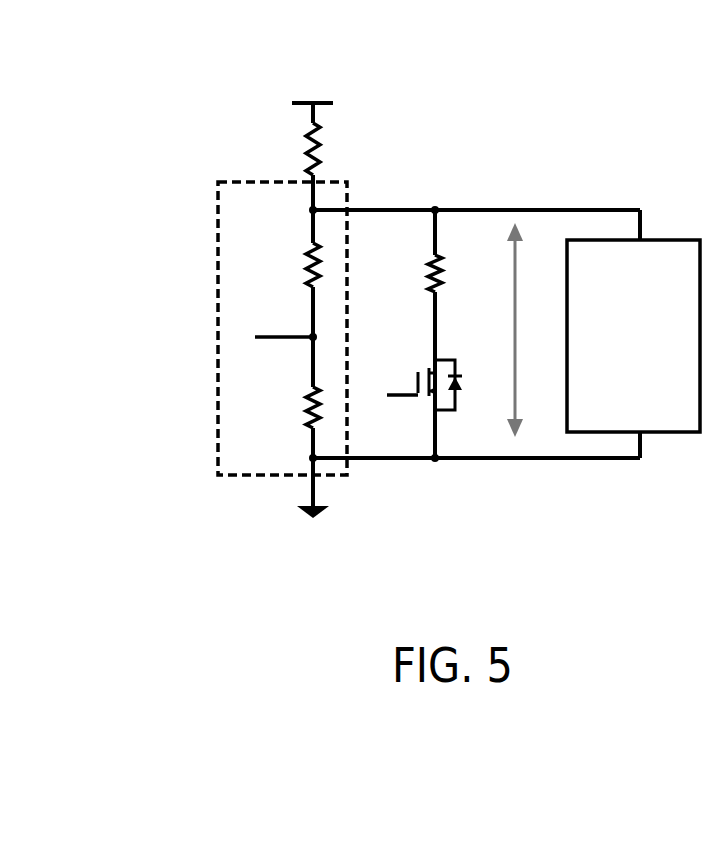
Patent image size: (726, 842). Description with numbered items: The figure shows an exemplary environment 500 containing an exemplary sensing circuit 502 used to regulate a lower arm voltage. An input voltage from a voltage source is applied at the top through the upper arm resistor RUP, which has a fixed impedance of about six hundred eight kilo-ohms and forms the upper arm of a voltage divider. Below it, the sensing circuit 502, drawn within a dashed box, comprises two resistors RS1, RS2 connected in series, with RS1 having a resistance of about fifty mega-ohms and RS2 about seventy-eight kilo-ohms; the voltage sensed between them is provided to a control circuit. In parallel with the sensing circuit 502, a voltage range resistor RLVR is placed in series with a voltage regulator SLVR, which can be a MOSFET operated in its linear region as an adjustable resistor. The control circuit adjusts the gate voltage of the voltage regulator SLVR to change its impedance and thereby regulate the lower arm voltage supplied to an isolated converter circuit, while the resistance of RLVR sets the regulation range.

The environment 500 is at (208, 152).
The sensing circuit 502 is at (262, 477).
The upper arm resistor RUP is at (348, 145).
The resistor RS1 is at (287, 265).
The resistor RS2 is at (287, 407).
The voltage range resistor RLVR is at (398, 273).
The voltage regulator SLVR is at (408, 385).